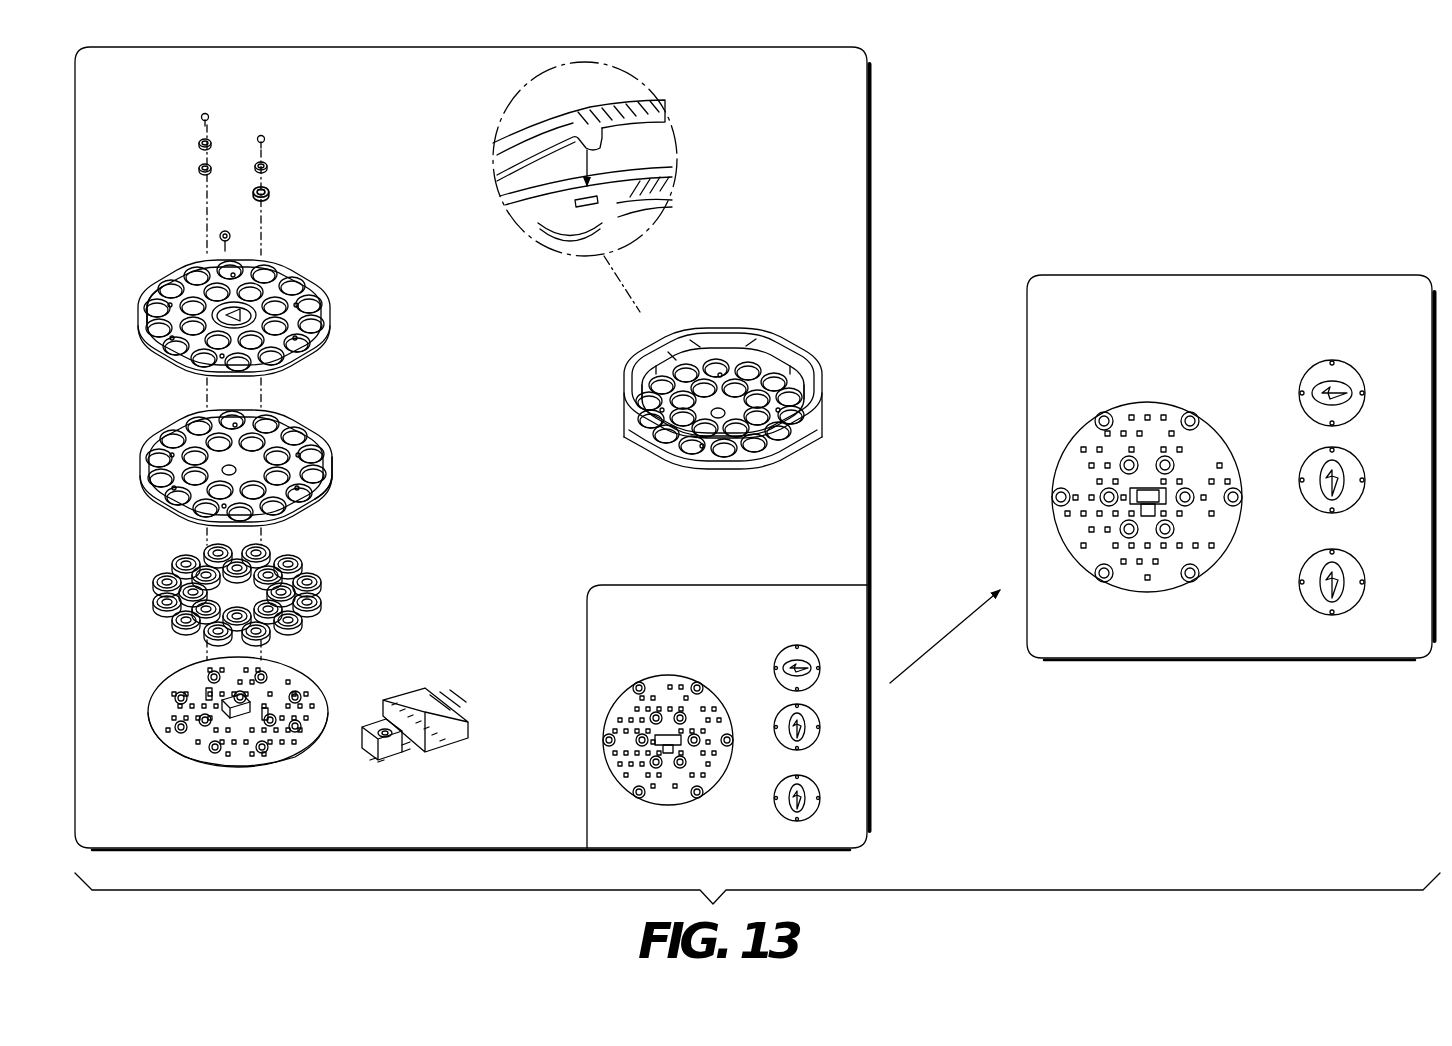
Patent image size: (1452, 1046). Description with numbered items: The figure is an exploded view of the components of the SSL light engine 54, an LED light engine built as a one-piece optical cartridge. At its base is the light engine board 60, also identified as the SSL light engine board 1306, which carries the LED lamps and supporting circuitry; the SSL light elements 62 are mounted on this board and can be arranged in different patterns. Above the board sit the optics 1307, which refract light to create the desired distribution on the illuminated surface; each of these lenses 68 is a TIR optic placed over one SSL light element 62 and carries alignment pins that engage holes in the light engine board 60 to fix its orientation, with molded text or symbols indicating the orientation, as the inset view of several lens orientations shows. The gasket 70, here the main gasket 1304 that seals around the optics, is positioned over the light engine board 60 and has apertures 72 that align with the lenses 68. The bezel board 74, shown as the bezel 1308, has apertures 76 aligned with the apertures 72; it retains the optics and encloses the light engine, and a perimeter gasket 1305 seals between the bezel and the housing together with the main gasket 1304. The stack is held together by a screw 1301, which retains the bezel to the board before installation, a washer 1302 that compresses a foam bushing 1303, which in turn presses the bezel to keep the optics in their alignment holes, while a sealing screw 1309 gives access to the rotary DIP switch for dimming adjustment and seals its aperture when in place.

The SSL light engine 54 is at (871, 181).
The light engine board 60 is at (670, 600).
The SSL light elements 62 is at (160, 695).
The lenses 68 is at (190, 558).
The gasket 70 is at (322, 494).
The apertures 72 is at (290, 437).
The bezel board 74 is at (154, 357).
The apertures 76 is at (312, 310).
The screw 1301 is at (266, 138).
The washer 1302 is at (266, 166).
The foam bushing 1303 is at (268, 195).
The main gasket 1304 is at (481, 447).
The perimeter gasket 1305 is at (624, 352).
The SSL light engine board 1306 is at (326, 689).
The optics 1307 is at (318, 564).
The bezel 1308 is at (295, 341).
The sealing screw 1309 is at (236, 237).